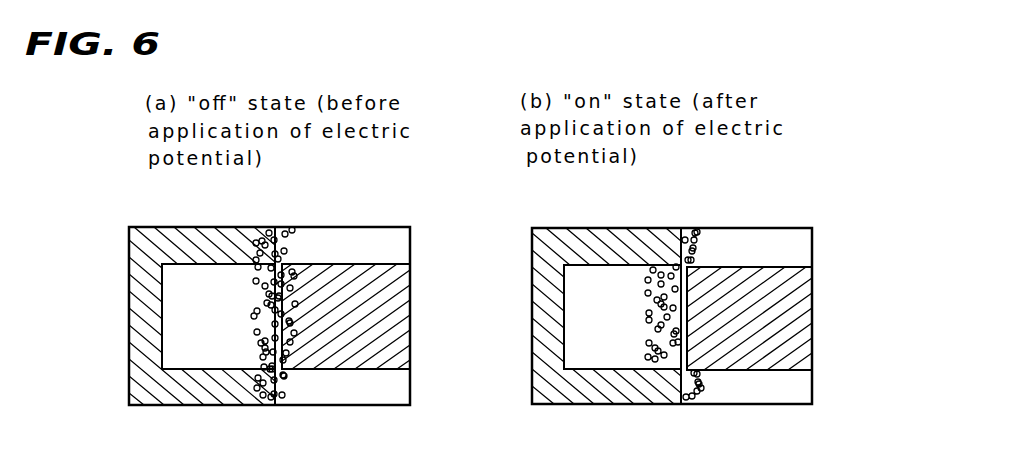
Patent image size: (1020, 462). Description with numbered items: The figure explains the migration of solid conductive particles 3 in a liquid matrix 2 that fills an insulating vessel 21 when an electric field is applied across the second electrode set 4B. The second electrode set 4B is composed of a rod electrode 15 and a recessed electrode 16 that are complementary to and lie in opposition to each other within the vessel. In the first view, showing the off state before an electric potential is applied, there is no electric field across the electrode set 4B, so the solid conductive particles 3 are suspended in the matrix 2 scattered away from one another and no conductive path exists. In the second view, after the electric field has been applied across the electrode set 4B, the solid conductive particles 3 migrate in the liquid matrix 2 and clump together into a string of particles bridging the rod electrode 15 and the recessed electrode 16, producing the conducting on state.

The liquid matrix 2 is at (200, 300).
The solid conductive particles 3 is at (252, 275).
The insulating vessel 21 is at (385, 227).
The second electrode set 4B is at (142, 277).
The rod electrode 15 is at (380, 313).
The recessed electrode 16 is at (142, 362).